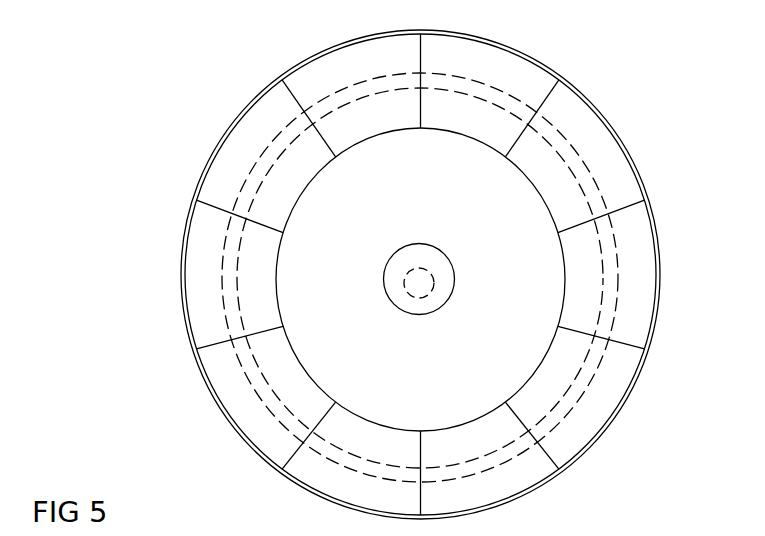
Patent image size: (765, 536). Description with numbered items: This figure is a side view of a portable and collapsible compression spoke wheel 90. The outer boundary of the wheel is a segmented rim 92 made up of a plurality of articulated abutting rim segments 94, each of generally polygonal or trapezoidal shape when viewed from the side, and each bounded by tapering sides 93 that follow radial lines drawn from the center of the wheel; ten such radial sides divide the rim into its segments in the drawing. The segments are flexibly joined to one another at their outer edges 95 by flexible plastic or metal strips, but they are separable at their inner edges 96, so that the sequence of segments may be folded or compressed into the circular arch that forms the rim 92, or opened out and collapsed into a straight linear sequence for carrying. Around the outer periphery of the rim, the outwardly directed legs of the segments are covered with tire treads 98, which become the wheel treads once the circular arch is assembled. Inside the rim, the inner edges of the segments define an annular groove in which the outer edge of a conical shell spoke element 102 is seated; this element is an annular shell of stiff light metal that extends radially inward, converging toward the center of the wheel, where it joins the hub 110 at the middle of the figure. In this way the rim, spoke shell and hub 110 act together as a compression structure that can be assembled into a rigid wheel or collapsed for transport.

The compression spoke wheel 90 is at (662, 74).
The segmented rim 92 is at (642, 273).
The tapering sides 93 is at (323, 142).
The rim segments 94 is at (381, 73).
The outer edges 95 is at (195, 352).
The inner edges 96 is at (561, 233).
The tire treads 98 is at (183, 256).
The conical shell spoke element 102 is at (356, 338).
The hub 110 is at (432, 274).